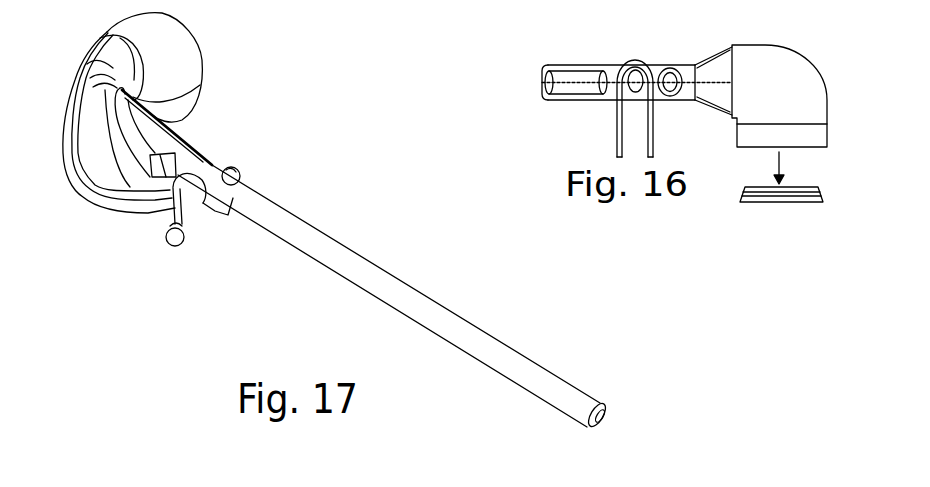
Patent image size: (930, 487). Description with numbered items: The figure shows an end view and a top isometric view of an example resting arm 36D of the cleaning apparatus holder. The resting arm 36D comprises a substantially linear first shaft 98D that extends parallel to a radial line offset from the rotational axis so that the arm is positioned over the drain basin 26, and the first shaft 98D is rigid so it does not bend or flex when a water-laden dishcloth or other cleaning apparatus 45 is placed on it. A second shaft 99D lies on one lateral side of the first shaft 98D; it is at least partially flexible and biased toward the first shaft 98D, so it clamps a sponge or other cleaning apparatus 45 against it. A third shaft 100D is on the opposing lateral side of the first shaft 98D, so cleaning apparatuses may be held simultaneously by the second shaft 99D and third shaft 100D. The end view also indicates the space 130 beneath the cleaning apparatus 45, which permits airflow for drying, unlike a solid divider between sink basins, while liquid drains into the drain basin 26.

In FIG. 17, the drain basin 26 is at (310, 0).
In FIG. 17, the resting arm 36D is at (393, 297).
In FIG. 16, the resting arm 36D is at (632, 60).
In FIG. 16, the cleaning apparatus 45 is at (617, 140).
In FIG. 16, the space 130 is at (641, 108).
In FIG. 17, the first shaft 98D is at (511, 349).
In FIG. 17, the second shaft 99D is at (185, 146).
In FIG. 17, the third shaft 100D is at (105, 213).